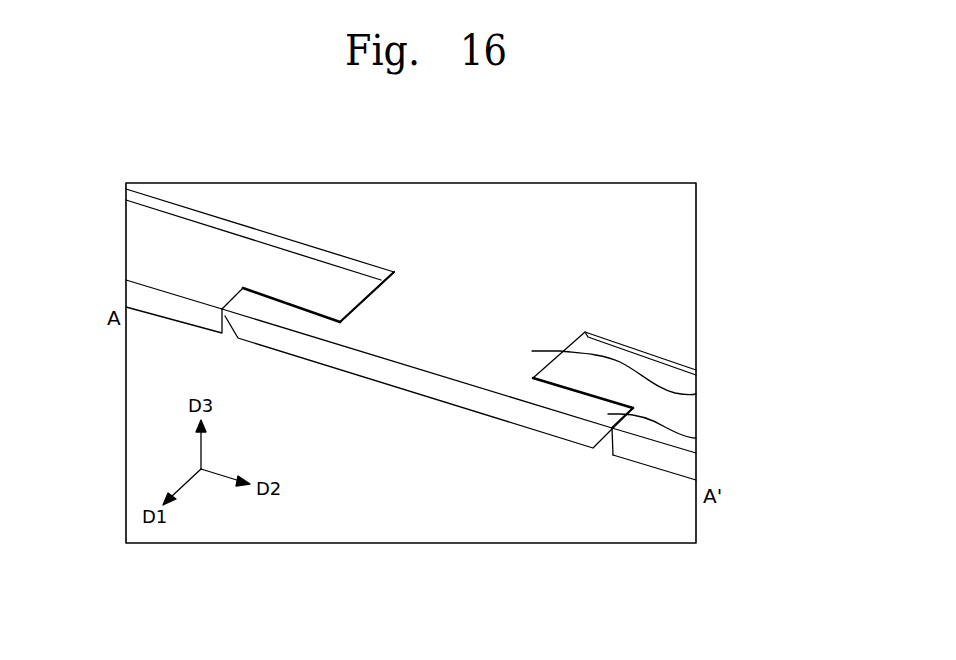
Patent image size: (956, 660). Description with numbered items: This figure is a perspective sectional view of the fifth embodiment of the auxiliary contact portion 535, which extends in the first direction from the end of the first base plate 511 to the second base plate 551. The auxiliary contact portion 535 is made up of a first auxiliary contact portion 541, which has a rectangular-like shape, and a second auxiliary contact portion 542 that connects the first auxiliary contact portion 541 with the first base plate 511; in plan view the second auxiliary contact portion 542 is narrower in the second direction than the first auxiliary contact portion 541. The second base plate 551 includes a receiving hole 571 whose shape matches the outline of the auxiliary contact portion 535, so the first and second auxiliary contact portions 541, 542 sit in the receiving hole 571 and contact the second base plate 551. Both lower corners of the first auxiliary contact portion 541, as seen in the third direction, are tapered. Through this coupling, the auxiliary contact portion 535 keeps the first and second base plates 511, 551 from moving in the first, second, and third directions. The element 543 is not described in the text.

The first base plate 511 is at (680, 249).
The second base plate 551 is at (143, 245).
The receiving hole 571 is at (293, 303).
The connection bar 543 is at (600, 443).
The auxiliary contact portion 535 is at (689, 391).
The second auxiliary contact portion 542 is at (696, 394).
The first auxiliary contact portion 541 is at (696, 438).